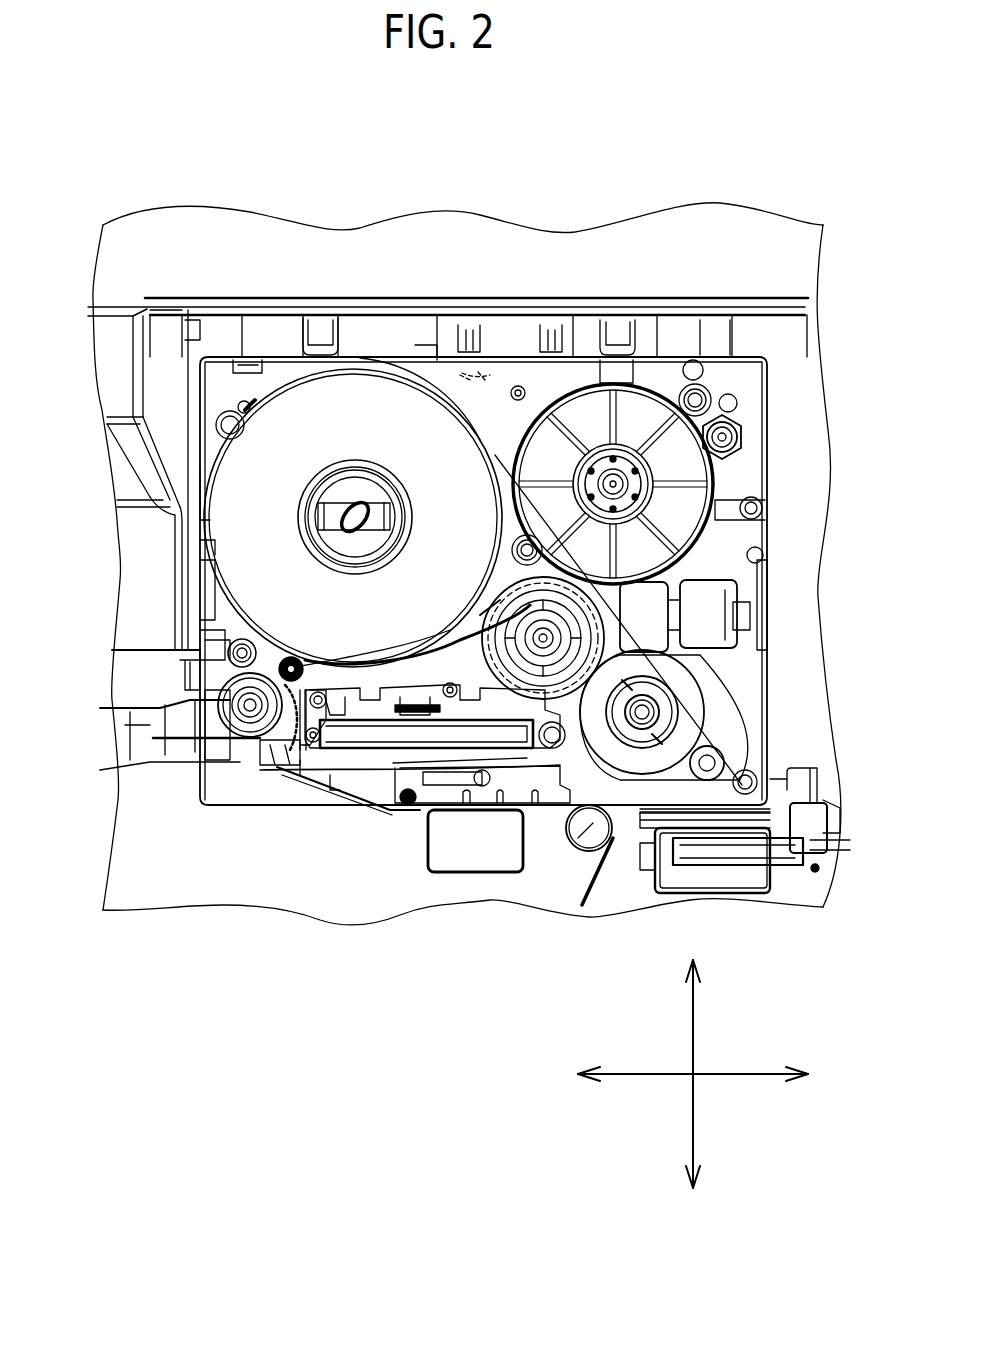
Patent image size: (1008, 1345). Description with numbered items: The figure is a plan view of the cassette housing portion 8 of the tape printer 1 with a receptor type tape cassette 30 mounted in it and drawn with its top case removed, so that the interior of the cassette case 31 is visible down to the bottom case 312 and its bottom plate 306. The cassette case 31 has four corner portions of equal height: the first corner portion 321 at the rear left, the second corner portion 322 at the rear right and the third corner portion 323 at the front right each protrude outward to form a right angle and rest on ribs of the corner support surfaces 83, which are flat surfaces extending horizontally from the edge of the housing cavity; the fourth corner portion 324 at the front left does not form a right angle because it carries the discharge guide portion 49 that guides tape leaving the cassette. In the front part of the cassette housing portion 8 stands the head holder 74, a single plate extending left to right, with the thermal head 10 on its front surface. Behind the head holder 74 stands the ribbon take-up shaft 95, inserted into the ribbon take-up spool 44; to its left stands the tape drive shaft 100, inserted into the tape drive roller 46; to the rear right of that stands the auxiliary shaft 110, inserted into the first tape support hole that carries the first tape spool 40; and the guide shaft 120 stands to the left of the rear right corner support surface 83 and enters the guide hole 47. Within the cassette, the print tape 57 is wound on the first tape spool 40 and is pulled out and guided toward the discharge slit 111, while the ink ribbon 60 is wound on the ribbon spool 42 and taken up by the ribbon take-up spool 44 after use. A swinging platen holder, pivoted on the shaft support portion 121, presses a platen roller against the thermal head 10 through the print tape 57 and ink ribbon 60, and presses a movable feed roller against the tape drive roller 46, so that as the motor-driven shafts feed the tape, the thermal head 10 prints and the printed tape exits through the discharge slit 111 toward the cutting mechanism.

The tape printer 1 is at (598, 184).
The cassette housing portion 8 is at (270, 343).
The thermal head 10 is at (395, 733).
The tape cassette 30 is at (707, 350).
The cassette case 31 is at (427, 343).
The first tape spool 40 is at (317, 467).
The ribbon spool 42 is at (678, 713).
The ribbon take-up spool 44 is at (587, 643).
The tape drive roller 46 is at (280, 753).
The guide hole 47 is at (737, 417).
The discharge guide portion 49 is at (200, 740).
The print tape 57 is at (357, 433).
The ink ribbon 60 is at (685, 733).
The head holder 74 is at (452, 738).
The corner support surfaces 83 is at (227, 340).
The ribbon take-up shaft 95 is at (567, 620).
The tape drive shaft 100 is at (247, 750).
The auxiliary shaft 110 is at (340, 514).
The discharge slit 111 is at (130, 722).
The guide shaft 120 is at (737, 440).
The shaft support portion 121 is at (570, 833).
The bottom plate 306 is at (502, 440).
The bottom case 312 is at (383, 343).
The first corner portion 321 is at (200, 357).
The second corner portion 322 is at (777, 357).
The third corner portion 323 is at (773, 790).
The fourth corner portion 324 is at (197, 667).